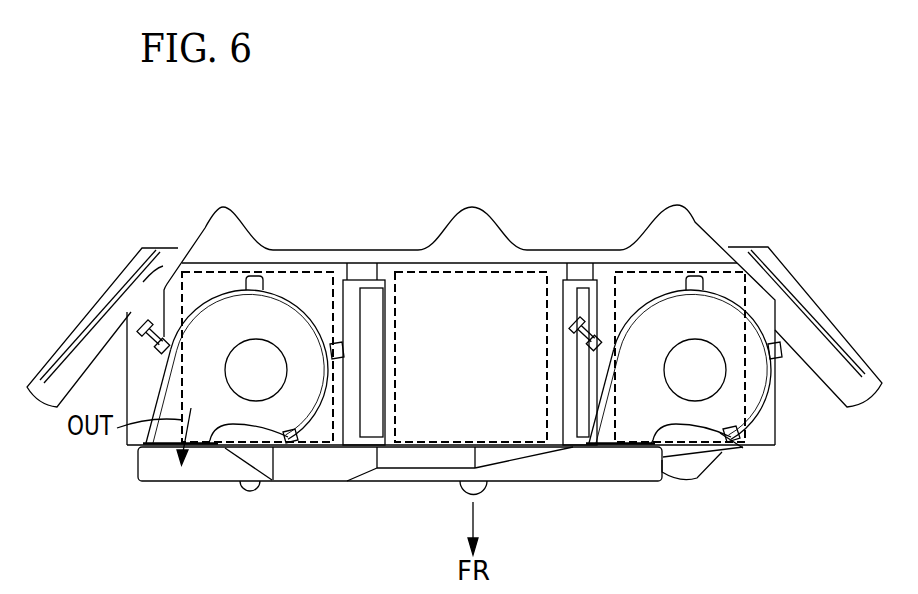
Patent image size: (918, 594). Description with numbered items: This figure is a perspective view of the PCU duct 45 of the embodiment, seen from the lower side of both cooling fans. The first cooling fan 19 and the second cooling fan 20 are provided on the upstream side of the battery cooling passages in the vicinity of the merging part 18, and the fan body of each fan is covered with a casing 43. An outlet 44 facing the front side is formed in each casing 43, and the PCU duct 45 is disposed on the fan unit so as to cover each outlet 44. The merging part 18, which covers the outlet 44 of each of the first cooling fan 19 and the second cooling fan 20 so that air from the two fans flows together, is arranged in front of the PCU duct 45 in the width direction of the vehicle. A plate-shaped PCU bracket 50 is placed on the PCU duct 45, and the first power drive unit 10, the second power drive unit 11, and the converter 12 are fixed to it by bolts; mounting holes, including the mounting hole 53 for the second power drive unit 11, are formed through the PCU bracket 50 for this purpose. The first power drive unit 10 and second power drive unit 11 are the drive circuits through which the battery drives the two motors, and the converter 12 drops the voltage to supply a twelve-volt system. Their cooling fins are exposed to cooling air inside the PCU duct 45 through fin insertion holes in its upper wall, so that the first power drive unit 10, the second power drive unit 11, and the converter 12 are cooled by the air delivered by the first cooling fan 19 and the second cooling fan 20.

The first power drive unit 10 is at (296, 270).
The second power drive unit 11 is at (507, 268).
The converter 12 is at (708, 270).
The merging part 18 is at (422, 462).
The first cooling fan 19 is at (220, 362).
The second cooling fan 20 is at (658, 362).
The casing 43 is at (303, 393).
The outlet 44 is at (170, 448).
The PCU duct 45 is at (535, 447).
The PCU bracket 50 is at (461, 207).
The mounting hole 53 is at (369, 320).